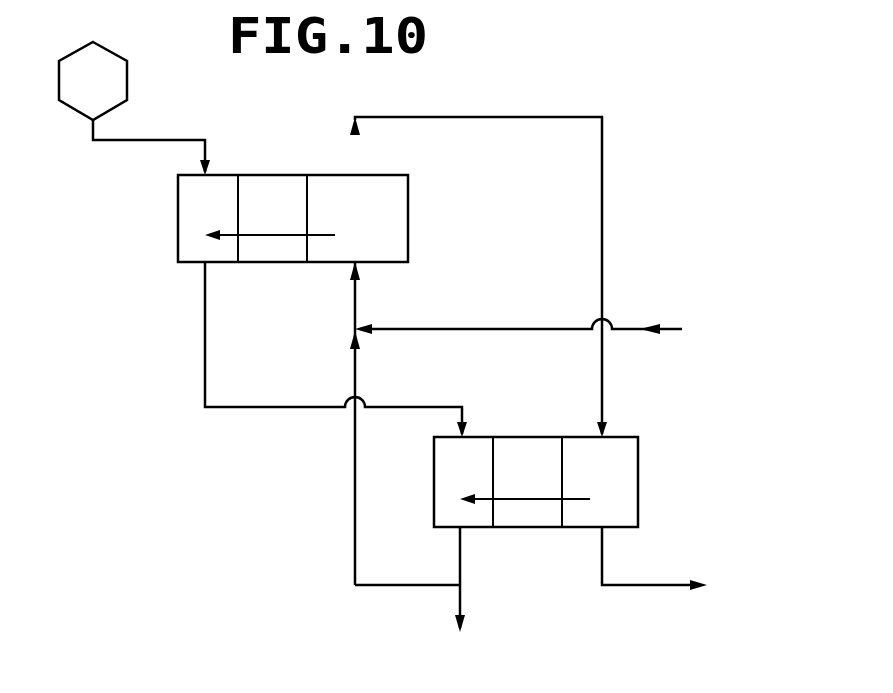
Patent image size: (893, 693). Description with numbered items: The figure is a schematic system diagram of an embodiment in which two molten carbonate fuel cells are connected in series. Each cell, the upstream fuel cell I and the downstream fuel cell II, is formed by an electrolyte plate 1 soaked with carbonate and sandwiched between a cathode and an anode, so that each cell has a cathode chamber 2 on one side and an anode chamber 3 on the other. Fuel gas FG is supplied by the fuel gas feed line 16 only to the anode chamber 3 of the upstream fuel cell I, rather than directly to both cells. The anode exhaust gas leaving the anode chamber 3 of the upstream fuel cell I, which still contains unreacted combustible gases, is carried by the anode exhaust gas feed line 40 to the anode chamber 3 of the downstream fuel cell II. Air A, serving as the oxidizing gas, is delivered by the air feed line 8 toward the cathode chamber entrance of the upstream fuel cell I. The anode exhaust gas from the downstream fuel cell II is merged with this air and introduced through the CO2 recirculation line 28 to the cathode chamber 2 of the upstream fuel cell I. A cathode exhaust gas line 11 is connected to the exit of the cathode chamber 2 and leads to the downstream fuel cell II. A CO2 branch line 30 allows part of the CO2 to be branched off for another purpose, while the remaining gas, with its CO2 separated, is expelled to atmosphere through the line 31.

The fuel gas FG is at (132, 108).
The fuel gas feed line 16 is at (197, 140).
The upstream fuel cell I is at (283, 175).
The downstream fuel cell II is at (537, 436).
The electrolyte plate 1 is at (285, 256).
The cathode chamber 2 is at (390, 243).
The anode chamber 3 is at (192, 240).
The cathode exhaust gas line 11 is at (516, 116).
The air feed line 8 is at (506, 298).
The air A is at (696, 335).
The CO2 recirculation line 28 is at (353, 518).
The anode exhaust gas feed line 40 is at (203, 374).
The CO2 branch line 30 is at (463, 595).
The line 31 is at (650, 590).